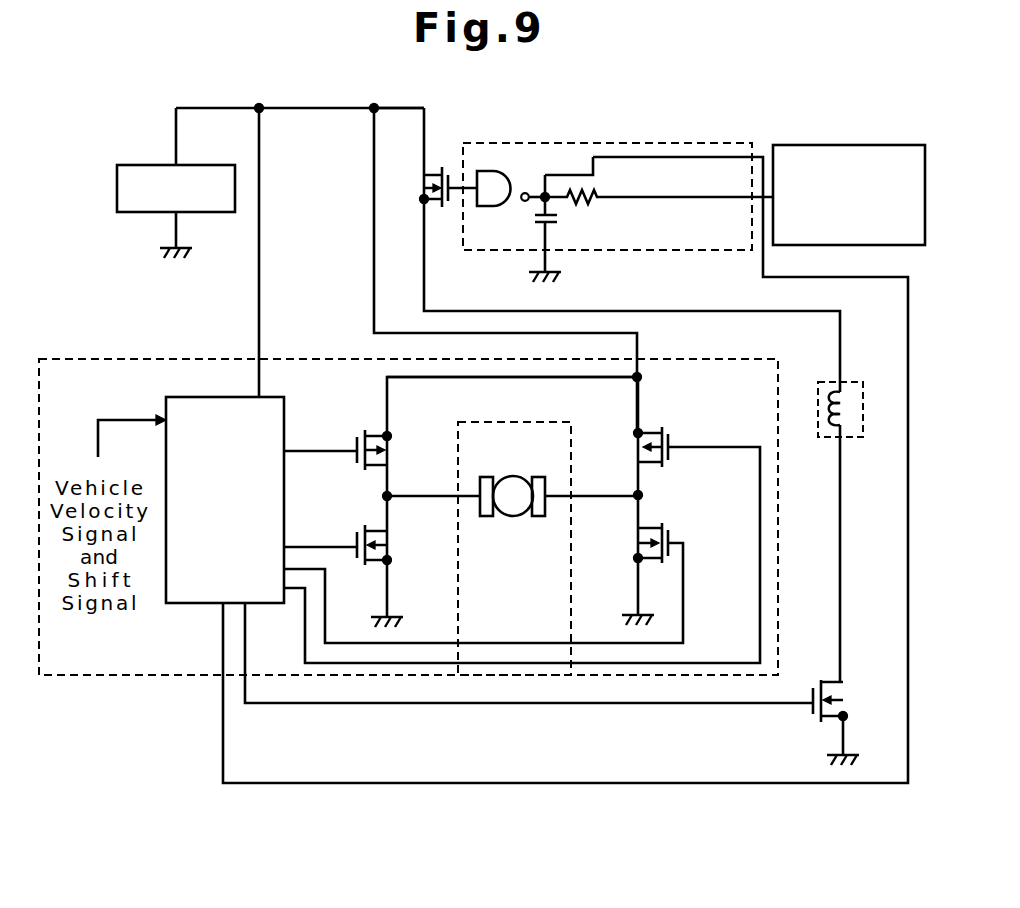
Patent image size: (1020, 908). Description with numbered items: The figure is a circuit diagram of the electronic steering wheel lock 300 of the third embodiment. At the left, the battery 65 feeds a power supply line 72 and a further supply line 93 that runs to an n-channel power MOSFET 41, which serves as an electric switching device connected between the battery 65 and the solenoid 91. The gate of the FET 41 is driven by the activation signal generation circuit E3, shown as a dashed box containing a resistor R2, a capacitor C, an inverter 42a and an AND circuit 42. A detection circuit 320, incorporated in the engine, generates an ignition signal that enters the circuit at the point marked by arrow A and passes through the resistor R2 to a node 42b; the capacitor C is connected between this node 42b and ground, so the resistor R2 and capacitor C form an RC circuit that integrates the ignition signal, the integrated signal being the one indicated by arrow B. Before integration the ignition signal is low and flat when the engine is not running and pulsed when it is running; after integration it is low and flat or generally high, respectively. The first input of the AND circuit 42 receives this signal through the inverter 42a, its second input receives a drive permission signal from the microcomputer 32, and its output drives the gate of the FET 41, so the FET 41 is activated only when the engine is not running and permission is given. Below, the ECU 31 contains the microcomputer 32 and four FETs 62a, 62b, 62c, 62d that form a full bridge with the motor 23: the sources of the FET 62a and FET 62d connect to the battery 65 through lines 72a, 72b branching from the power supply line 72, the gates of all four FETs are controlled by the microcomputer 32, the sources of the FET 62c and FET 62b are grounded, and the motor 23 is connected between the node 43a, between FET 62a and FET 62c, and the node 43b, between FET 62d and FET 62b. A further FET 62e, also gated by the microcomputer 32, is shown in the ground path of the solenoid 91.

The electronic steering wheel lock 300 is at (772, 103).
The battery 65 is at (186, 165).
The power supply line 93 is at (400, 110).
The power supply line 72 is at (374, 218).
The n-channel power MOSFET 41 is at (449, 164).
The activation signal generation circuit E3 is at (637, 251).
The AND circuit 42 is at (497, 208).
The inverter 42a is at (528, 205).
The node 42b is at (548, 183).
The arrow B is at (532, 188).
The arrow A is at (606, 186).
The capacitor C is at (561, 221).
The resistor R2 is at (594, 205).
The detection circuit 320 is at (822, 145).
The solenoid 91 is at (882, 380).
The ECU 31 is at (325, 357).
The microcomputer 32 is at (201, 603).
The power line 72a is at (387, 401).
The power line 72b is at (637, 399).
The FET 62a is at (352, 437).
The FET 62b is at (668, 528).
The FET 62c is at (354, 558).
The FET 62d is at (668, 436).
The transistor 62e is at (813, 709).
The node 43a is at (395, 502).
The node 43b is at (632, 500).
The motor 23 is at (504, 476).